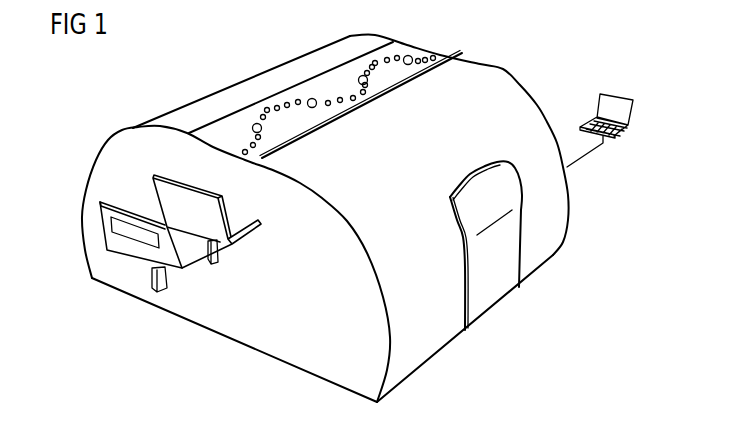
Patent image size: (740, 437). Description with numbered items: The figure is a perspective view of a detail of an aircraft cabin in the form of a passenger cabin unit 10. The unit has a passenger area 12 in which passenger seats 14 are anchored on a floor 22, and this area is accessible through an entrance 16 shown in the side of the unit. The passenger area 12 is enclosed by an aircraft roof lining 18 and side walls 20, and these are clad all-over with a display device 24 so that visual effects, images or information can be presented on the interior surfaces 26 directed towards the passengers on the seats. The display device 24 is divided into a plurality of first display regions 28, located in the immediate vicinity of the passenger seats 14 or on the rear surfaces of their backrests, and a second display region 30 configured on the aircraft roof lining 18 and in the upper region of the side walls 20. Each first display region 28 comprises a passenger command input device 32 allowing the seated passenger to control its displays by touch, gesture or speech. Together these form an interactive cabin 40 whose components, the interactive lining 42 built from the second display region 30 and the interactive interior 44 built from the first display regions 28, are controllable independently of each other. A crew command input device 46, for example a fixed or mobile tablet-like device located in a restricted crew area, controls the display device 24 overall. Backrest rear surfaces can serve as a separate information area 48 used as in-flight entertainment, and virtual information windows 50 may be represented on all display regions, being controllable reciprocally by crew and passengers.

The passenger cabin unit 10 is at (219, 67).
The passenger area 12 is at (192, 285).
The passenger seats 14 is at (184, 267).
The entrance 16 is at (487, 299).
The aircraft roof lining 18 is at (183, 145).
The side walls 20 is at (98, 178).
The floor 22 is at (288, 343).
The display device 24 is at (194, 152).
The interior surfaces 26 is at (99, 203).
The first display regions 28 is at (104, 253).
The second display region 30 is at (247, 161).
The passenger command input devices 32 is at (93, 279).
The interactive cabin 40 is at (535, 76).
The interactive lining 42 is at (209, 154).
The interactive interior 44 is at (110, 163).
The crew command input device 46 is at (612, 91).
The separate information area 48 is at (128, 237).
The virtual information window 50 is at (96, 238).